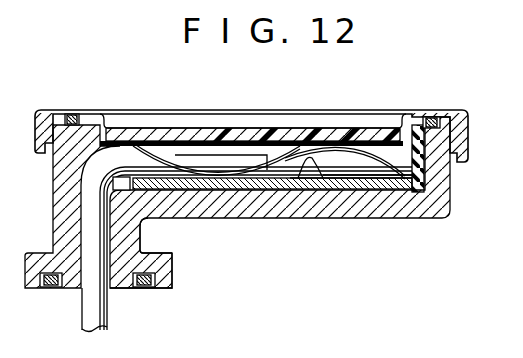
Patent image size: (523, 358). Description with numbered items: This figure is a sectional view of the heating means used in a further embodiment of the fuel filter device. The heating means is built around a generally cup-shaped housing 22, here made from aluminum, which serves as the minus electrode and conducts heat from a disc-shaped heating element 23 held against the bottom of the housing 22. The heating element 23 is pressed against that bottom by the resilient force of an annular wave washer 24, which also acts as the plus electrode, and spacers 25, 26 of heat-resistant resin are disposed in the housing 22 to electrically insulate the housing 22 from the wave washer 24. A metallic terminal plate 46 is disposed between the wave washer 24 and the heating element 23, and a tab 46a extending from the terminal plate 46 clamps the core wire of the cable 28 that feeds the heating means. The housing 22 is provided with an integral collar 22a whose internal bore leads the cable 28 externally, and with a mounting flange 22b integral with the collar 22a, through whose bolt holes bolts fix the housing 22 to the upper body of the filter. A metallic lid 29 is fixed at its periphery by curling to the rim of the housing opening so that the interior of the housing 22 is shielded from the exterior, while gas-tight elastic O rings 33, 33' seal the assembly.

The housing 22 is at (440, 211).
The collar 22a is at (168, 237).
The mounting flange 22b is at (172, 280).
The heating element 23 is at (360, 189).
The wave washer 24 is at (377, 141).
The spacer 25 is at (422, 170).
The spacer 26 is at (238, 142).
The cable 28 is at (107, 310).
The lid 29 is at (143, 128).
The O ring 33 is at (88, 214).
The O ring 33' is at (455, 101).
The terminal plate 46 is at (267, 182).
The tab 46a is at (313, 183).